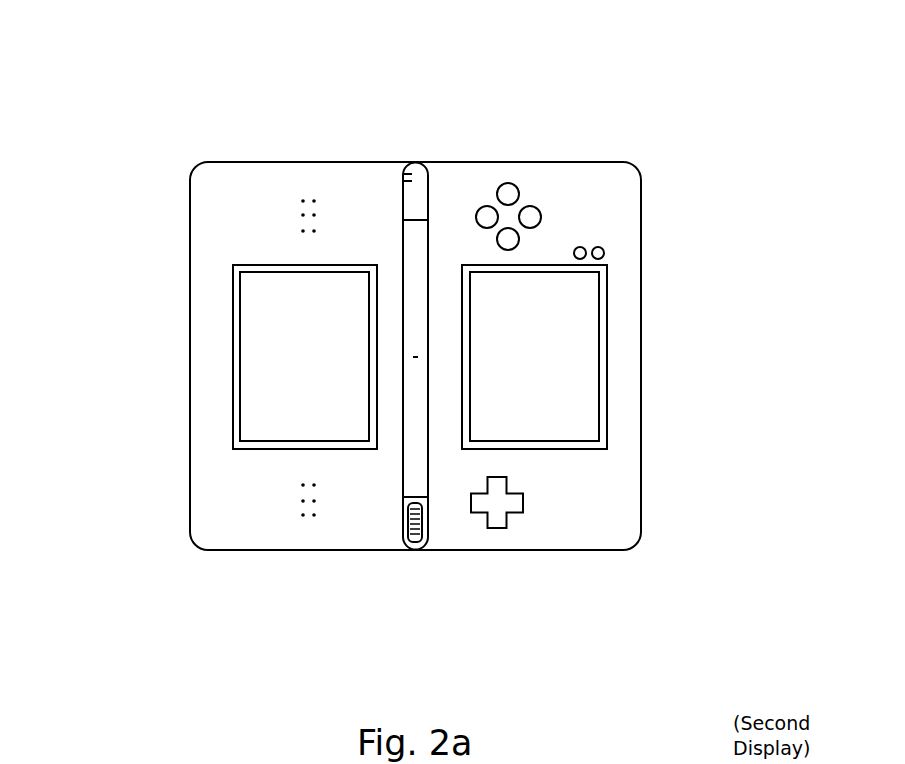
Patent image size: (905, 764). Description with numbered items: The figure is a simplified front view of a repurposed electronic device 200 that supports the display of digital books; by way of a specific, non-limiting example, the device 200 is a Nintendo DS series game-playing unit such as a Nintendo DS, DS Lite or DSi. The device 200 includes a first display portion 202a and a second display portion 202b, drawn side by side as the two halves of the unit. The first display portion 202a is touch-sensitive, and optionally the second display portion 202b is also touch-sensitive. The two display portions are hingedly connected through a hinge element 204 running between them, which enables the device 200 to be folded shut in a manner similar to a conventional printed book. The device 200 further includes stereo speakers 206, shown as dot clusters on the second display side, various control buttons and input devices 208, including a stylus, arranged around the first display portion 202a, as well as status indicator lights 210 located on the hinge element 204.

The repurposed electronic device 200 is at (243, 80).
The first display portion 202a is at (580, 358).
The second display portion 202b is at (258, 364).
The hinge element 204 is at (417, 183).
The stereo speakers 206 is at (282, 633).
The control buttons and input devices 208 is at (533, 633).
The status indicator lights 210 is at (423, 523).